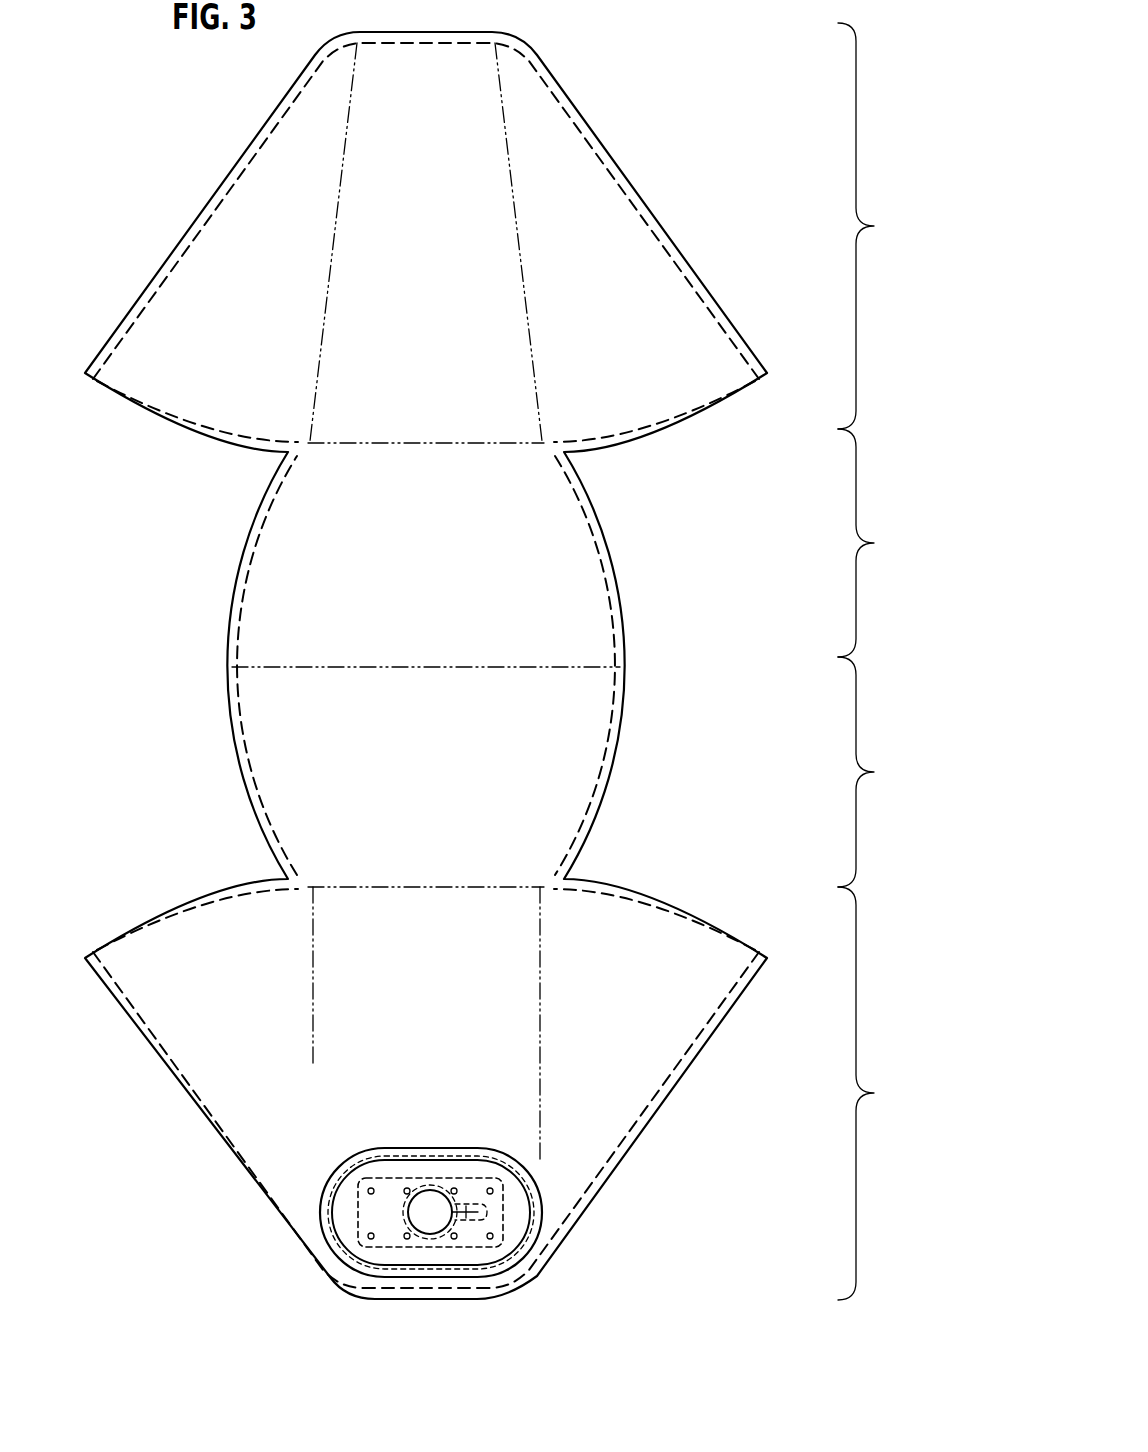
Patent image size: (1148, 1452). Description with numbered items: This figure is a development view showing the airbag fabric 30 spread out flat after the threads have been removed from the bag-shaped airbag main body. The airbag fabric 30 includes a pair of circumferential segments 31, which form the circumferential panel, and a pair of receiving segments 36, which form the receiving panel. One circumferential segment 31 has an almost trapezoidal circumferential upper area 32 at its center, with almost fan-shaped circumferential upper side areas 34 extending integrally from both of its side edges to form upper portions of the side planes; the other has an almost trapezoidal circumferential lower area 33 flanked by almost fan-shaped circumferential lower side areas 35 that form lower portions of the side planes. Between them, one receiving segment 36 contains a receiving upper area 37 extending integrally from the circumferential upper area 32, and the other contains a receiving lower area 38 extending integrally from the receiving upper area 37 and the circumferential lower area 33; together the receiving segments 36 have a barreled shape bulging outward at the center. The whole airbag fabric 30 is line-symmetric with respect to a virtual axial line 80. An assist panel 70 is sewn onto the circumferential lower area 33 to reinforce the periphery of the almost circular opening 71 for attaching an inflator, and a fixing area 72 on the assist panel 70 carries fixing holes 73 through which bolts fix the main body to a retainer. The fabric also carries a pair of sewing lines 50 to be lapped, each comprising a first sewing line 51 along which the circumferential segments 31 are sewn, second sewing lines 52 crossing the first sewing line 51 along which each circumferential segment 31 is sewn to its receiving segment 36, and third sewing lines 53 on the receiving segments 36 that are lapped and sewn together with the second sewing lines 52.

The airbag fabric 30 is at (124, 217).
The circumferential segments 31 is at (871, 661).
The circumferential upper area 32 is at (443, 285).
The circumferential lower area 33 is at (451, 1010).
The circumferential upper side areas 34 is at (279, 285).
The circumferential lower side areas 35 is at (258, 1010).
The receiving segments 36 is at (873, 658).
The receiving upper area 37 is at (446, 585).
The receiving lower area 38 is at (451, 797).
The sewing lines 50 is at (426, 665).
The first sewing line 51 is at (553, 95).
The second sewing lines 52 is at (173, 412).
The third sewing lines 53 is at (237, 582).
The assist panel 70 is at (527, 1257).
The opening 71 is at (431, 1208).
The fixing area 72 is at (401, 1178).
The fixing holes 73 is at (368, 1182).
The virtual axial line 80 is at (298, 667).